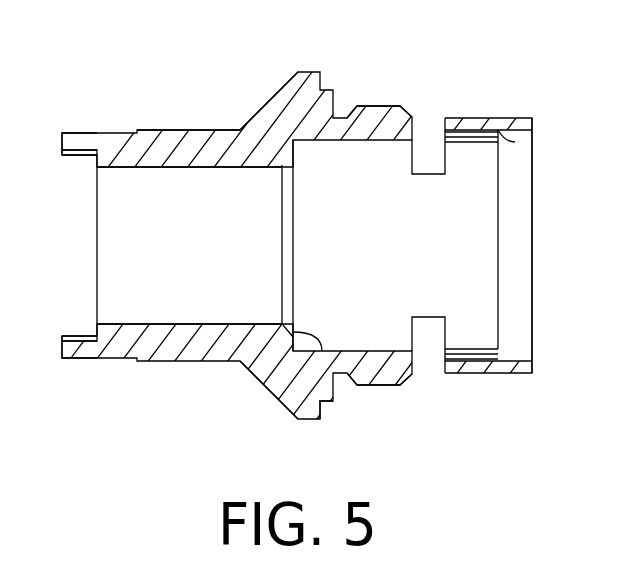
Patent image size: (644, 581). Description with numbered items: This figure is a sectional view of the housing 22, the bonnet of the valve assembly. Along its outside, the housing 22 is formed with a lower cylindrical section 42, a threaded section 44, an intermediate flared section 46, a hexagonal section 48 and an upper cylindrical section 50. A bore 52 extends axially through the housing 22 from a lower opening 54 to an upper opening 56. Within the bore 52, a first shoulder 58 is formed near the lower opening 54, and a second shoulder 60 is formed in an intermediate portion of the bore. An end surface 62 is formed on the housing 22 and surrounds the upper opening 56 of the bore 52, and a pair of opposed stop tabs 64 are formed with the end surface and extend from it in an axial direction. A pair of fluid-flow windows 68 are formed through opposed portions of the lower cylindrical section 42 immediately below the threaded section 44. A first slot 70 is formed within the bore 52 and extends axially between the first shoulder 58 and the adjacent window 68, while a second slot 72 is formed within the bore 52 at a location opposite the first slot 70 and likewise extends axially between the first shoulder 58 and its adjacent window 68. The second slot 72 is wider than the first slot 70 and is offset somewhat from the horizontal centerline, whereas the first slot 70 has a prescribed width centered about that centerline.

The housing 22 is at (305, 60).
The lower cylindrical section 42 is at (462, 118).
The threaded section 44 is at (372, 106).
The intermediate flared section 46 is at (258, 112).
The hexagonal section 48 is at (160, 130).
The upper cylindrical section 50 is at (84, 133).
The bore 52 is at (214, 312).
The lower opening 54 is at (533, 146).
The upper opening 56 is at (118, 325).
The first shoulder 58 is at (530, 118).
The second shoulder 60 is at (322, 414).
The end surface 62 is at (96, 262).
The stop tabs 64 is at (63, 133).
The fluid-flow windows 68 is at (445, 118).
The first slot 70 is at (476, 140).
The second slot 72 is at (473, 336).